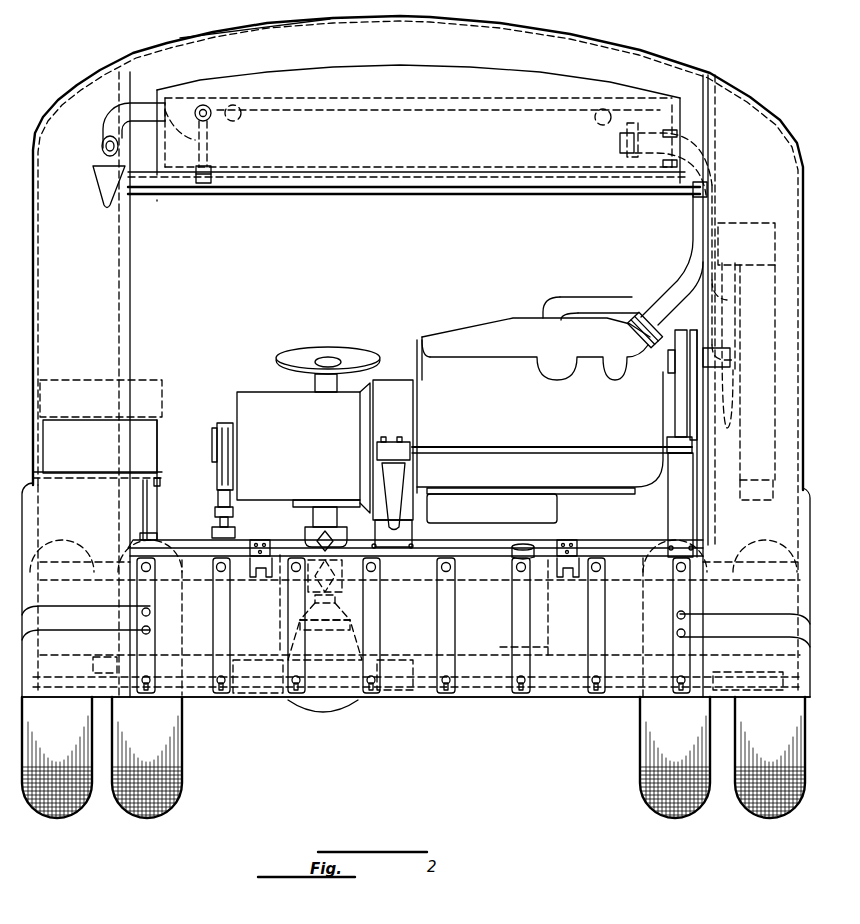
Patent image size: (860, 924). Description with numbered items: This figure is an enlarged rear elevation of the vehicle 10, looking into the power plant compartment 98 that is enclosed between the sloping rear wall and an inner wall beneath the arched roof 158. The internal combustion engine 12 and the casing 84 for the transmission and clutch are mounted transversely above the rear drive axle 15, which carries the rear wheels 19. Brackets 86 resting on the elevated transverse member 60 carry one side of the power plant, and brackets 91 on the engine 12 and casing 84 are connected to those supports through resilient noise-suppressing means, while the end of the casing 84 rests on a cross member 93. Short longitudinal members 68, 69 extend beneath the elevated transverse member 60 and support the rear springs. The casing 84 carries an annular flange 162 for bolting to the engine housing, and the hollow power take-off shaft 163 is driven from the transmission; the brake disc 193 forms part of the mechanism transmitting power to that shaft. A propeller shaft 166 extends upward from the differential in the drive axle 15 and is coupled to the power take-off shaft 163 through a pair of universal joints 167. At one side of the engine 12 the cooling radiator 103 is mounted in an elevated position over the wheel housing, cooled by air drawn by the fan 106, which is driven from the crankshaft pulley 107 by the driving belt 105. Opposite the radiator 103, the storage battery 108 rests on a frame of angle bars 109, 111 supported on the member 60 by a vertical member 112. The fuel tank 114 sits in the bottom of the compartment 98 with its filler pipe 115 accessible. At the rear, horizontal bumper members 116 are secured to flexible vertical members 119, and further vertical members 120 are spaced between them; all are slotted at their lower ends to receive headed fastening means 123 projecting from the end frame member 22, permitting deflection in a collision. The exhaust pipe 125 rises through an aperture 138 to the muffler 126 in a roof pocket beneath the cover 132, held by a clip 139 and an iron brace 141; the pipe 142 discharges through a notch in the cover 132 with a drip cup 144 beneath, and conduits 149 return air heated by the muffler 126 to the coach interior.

The vehicle 10 is at (712, 76).
The internal combustion engine 12 is at (428, 330).
The rear drive axle 15 is at (553, 692).
The rear wheels 19 is at (186, 768).
The end frame member 22 is at (418, 700).
The elevated transverse member 60 is at (458, 548).
The short longitudinal member 68 is at (567, 575).
The short longitudinal member 69 is at (258, 575).
The casing for transmission and clutch mechanism 84 is at (291, 439).
The brackets 86 is at (405, 530).
The brackets 91 is at (392, 452).
The cross member 93 is at (216, 488).
The compartment 98 is at (258, 271).
The cooling radiator 103 is at (748, 285).
The driving belt 105 is at (676, 405).
The fan 106 is at (722, 330).
The pulley 107 is at (662, 327).
The storage battery 108 is at (83, 392).
The angle bar 109 is at (158, 480).
The angle bar 111 is at (86, 483).
The vertical member 112 is at (158, 504).
The fuel tank 114 is at (549, 647).
The filler pipe 115 is at (534, 548).
The horizontal members 116 is at (72, 618).
The vertical members 119 is at (150, 657).
The vertical members 120 is at (300, 693).
The headed fastening means 123 is at (296, 678).
The exhaust pipe 125 is at (692, 214).
The muffler 126 is at (353, 152).
The cover 132 is at (488, 104).
The aperture 138 is at (690, 133).
The clip 139 is at (640, 126).
The iron brace 141 is at (212, 160).
The pipe 142 is at (110, 118).
The drip cup 144 is at (108, 183).
The conduits 149 is at (240, 108).
The arched roof 158 is at (216, 36).
The annular flange 162 is at (413, 380).
The hollow power take-off shaft 163 is at (313, 517).
The propeller shaft 166 is at (343, 602).
The universal joints 167 is at (343, 582).
The brake disc 193 is at (290, 352).